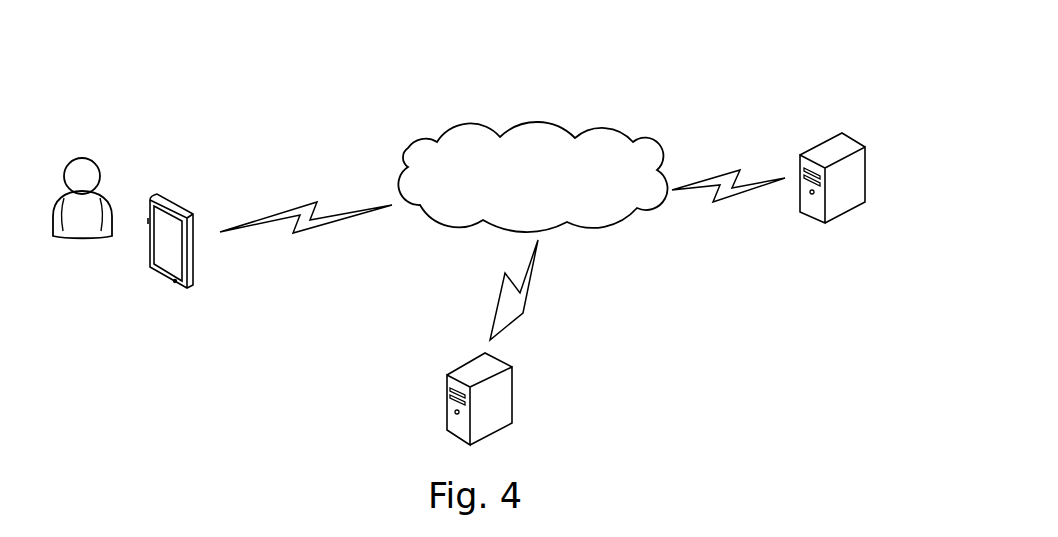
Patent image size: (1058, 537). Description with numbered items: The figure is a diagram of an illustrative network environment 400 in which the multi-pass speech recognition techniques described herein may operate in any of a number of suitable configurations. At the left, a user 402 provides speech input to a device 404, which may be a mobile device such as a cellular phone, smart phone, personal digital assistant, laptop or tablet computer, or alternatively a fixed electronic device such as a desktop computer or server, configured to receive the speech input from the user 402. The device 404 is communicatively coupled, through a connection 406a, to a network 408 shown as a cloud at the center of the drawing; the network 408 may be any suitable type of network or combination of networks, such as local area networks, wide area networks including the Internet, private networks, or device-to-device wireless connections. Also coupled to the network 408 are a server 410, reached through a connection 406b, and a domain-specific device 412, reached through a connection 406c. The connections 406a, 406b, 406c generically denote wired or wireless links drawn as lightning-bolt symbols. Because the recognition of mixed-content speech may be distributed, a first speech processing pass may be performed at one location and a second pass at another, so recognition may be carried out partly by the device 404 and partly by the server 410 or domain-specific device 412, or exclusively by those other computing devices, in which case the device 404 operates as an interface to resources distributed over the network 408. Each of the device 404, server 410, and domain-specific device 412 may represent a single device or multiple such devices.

The network environment 400 is at (735, 76).
The user 402 is at (82, 158).
The device 404 is at (191, 193).
The connection 406a is at (315, 200).
The connection 406b is at (723, 173).
The connection 406c is at (528, 293).
The network 408 is at (541, 121).
The server 410 is at (842, 142).
The domain-specific device 412 is at (512, 377).